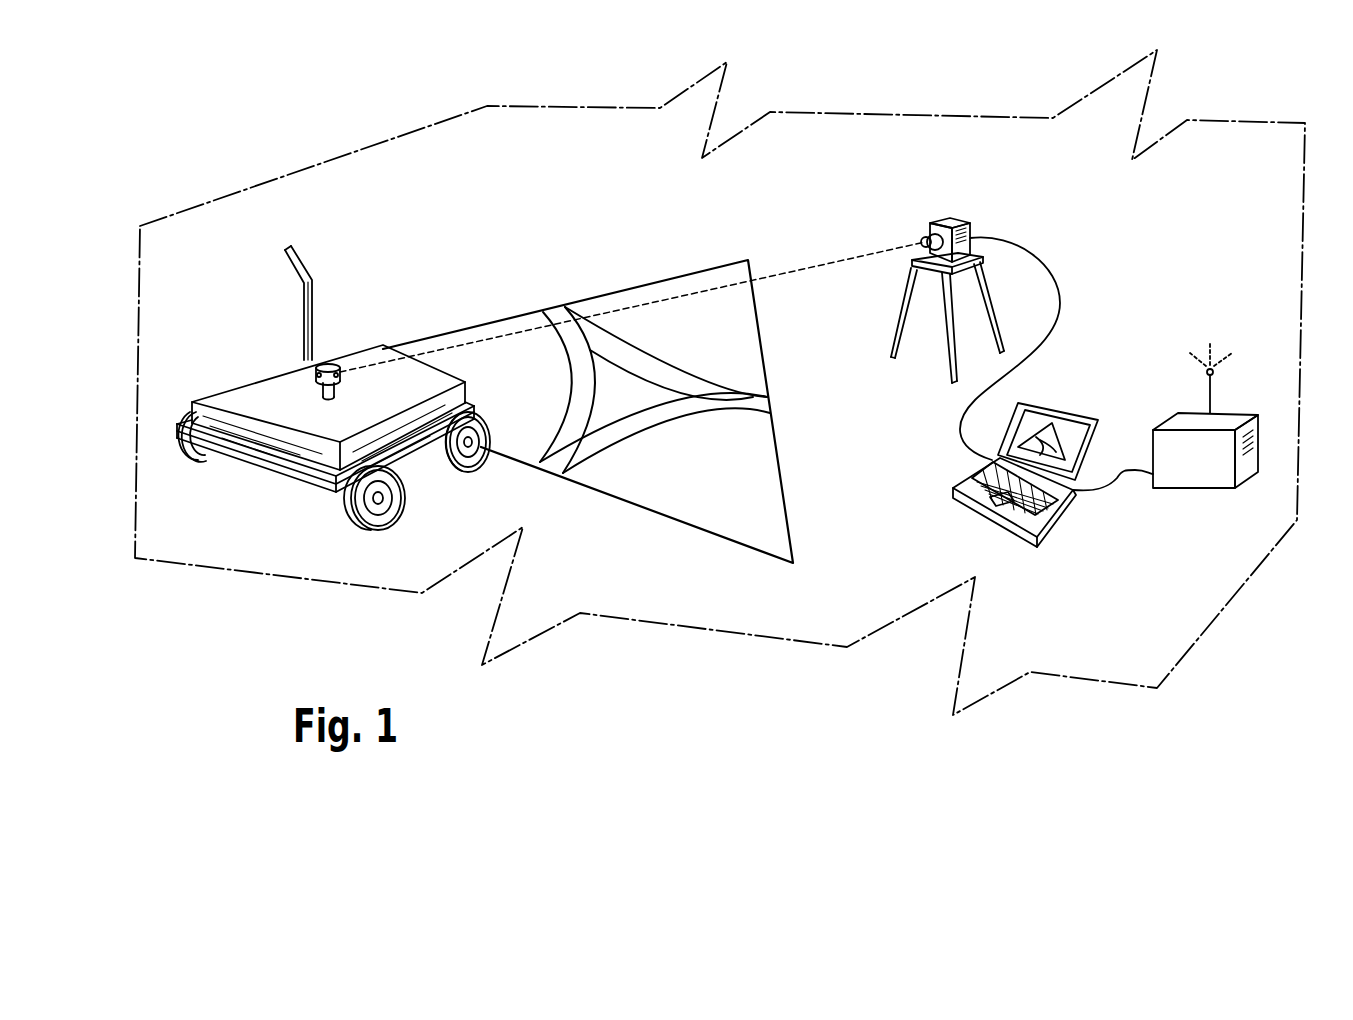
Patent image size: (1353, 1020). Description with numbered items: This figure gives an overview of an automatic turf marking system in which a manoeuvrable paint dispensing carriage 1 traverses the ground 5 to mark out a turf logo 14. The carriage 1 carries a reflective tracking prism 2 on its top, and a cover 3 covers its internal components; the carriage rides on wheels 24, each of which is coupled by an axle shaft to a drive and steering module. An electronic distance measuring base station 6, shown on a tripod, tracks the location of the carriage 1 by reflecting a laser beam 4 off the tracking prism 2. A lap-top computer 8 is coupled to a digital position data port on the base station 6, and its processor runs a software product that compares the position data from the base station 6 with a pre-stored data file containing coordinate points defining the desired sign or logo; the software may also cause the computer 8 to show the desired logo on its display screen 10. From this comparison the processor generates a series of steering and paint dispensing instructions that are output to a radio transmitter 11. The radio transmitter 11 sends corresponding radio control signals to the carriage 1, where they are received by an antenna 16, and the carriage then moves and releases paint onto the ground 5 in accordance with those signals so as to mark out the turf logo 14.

The paint dispensing carriage 1 is at (326, 372).
The reflective tracking prism 2 is at (328, 362).
The cover 3 is at (325, 447).
The laser beam 4 is at (792, 270).
The ground 5 is at (497, 167).
The electronic distance measuring (EDM) base station 6 is at (948, 223).
The lap-top computer 8 is at (1053, 458).
The display screen 10 is at (1040, 420).
The radio transmitter 11 is at (1185, 472).
The turf logo 14 is at (752, 407).
The antenna 16 is at (302, 260).
The wheels 24 is at (384, 488).